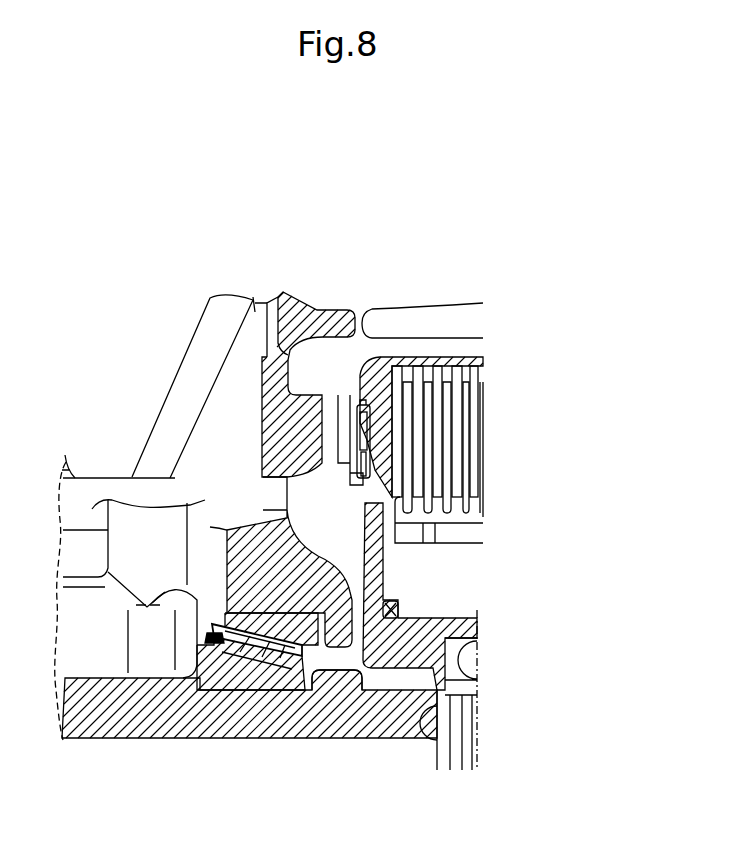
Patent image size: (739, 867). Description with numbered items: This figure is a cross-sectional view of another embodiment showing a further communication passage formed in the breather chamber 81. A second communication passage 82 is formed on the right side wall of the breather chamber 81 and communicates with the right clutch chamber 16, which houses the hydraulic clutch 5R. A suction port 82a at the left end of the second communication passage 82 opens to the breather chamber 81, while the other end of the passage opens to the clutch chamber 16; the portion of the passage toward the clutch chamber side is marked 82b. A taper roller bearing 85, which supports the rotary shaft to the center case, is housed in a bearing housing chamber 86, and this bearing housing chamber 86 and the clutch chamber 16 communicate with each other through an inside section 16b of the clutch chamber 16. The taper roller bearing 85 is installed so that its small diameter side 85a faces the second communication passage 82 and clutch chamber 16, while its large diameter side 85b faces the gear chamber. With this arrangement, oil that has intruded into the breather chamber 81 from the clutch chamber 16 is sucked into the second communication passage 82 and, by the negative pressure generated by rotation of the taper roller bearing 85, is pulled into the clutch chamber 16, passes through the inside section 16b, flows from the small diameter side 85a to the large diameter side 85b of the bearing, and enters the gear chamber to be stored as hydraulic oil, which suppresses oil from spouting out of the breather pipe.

The right clutch chamber 16 is at (303, 470).
The inside section of the clutch chamber 16b is at (386, 608).
The breather chamber 81 is at (210, 482).
The second communication passage 82 is at (173, 478).
The suction port 82a is at (277, 477).
The arm leg 82b is at (385, 548).
The taper roller bearing 85 is at (230, 657).
The small diameter side 85a is at (300, 665).
The large diameter side 85b is at (203, 672).
The bearing housing chamber 86 is at (332, 668).
The hydraulic clutch 5R is at (489, 439).